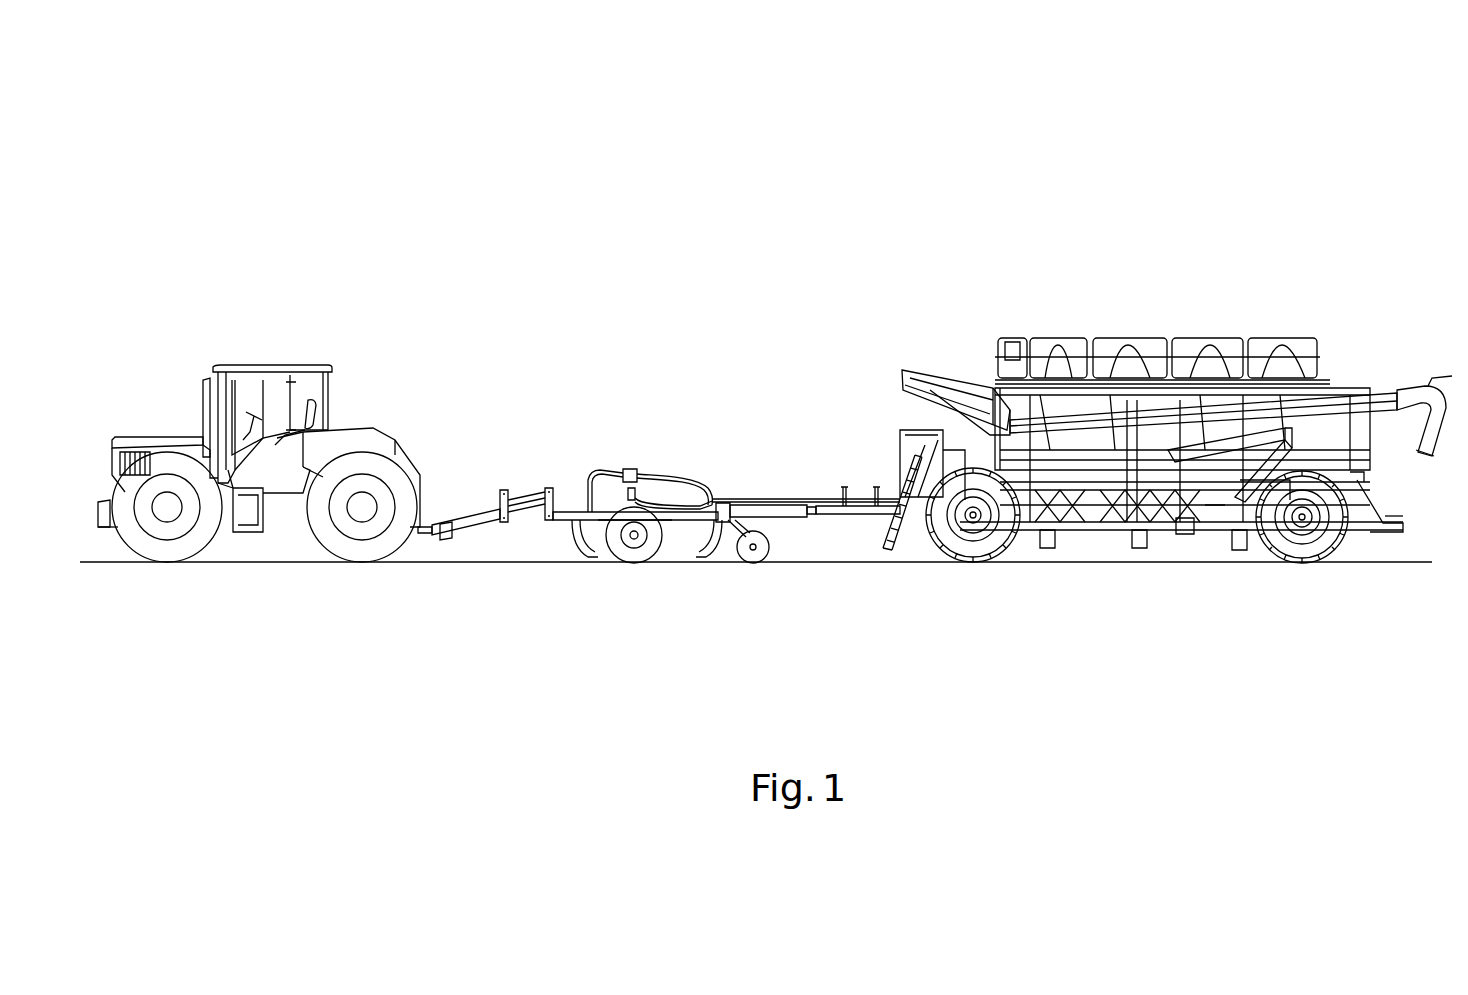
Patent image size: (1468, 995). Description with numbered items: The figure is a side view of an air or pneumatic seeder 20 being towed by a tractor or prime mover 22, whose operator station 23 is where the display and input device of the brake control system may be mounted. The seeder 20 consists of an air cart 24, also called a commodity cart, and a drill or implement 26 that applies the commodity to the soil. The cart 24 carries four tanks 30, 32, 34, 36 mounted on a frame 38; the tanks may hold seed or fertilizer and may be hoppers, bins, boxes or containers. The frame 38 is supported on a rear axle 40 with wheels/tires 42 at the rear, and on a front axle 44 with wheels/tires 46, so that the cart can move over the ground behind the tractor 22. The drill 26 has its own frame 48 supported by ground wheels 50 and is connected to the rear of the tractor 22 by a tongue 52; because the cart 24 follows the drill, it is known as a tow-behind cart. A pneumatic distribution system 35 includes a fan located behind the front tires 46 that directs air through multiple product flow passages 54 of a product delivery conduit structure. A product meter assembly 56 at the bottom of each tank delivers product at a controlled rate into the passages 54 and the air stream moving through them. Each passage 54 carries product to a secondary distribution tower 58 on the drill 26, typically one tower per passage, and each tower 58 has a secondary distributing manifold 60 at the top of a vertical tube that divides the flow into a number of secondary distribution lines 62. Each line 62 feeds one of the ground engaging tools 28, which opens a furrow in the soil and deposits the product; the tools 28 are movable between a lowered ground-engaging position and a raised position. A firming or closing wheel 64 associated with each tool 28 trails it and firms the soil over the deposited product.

The air seeder 20 is at (1074, 212).
The tractor 22 is at (319, 318).
The operator station 23 is at (259, 398).
The air cart 24 is at (1157, 337).
The drill 26 is at (725, 500).
The ground engaging tools 28 is at (573, 560).
The tank 30 is at (960, 390).
The tank 32 is at (1062, 337).
The tank 34 is at (1197, 337).
The pneumatic distribution system 35 is at (1185, 538).
The tank 36 is at (1275, 337).
The frame 38 is at (1062, 534).
The rear axle 40 is at (1318, 544).
The wheels/tires 42 is at (1303, 532).
The front axle 44 is at (975, 530).
The wheels/tires 46 is at (936, 550).
The frame 48 is at (672, 550).
The ground wheels 50 is at (634, 563).
The tongue 52 is at (465, 538).
The product flow passages 54 is at (810, 495).
The product meter assembly 56 is at (1048, 550).
The secondary distribution tower 58 is at (648, 476).
The secondary distributing manifold 60 is at (625, 470).
The secondary distribution lines 62 is at (672, 480).
The closing wheel 64 is at (757, 560).